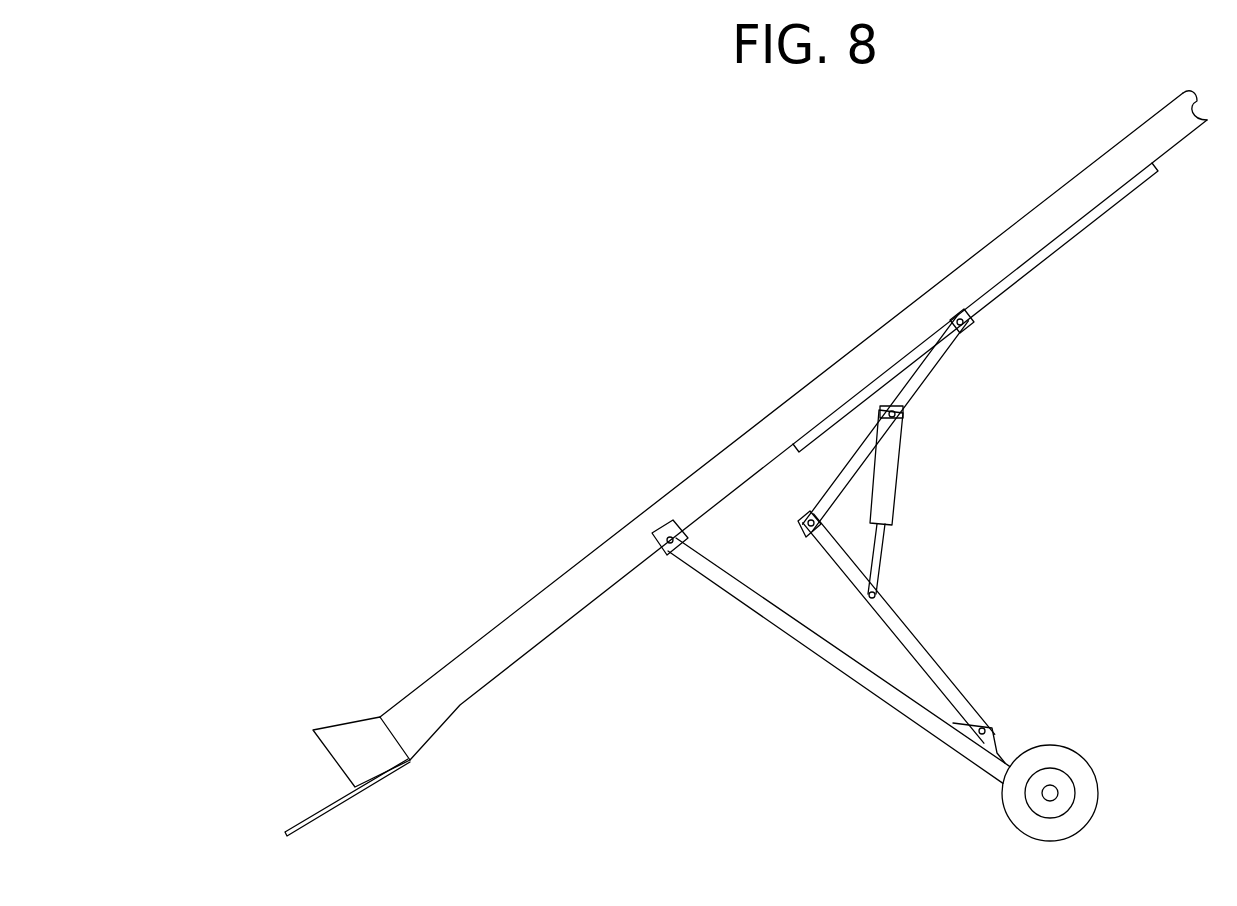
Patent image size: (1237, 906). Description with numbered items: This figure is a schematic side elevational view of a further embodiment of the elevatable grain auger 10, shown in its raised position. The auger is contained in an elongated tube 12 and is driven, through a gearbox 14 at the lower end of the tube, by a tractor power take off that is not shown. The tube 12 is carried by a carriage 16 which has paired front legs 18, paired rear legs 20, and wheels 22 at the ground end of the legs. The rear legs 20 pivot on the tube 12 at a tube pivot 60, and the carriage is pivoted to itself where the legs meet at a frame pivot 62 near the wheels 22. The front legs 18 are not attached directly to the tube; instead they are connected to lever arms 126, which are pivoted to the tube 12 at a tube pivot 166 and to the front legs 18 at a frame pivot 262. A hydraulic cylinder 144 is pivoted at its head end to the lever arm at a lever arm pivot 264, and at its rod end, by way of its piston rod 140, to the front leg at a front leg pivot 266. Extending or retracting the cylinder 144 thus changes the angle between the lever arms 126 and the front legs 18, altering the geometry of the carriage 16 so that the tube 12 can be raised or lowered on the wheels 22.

The elevatable grain auger 10 is at (530, 563).
The elongated tube 12 is at (797, 402).
The gearbox 14 is at (352, 753).
The carriage 16 is at (792, 668).
The front legs 18 is at (924, 658).
The rear legs 20 is at (872, 678).
The wheels 22 is at (1080, 765).
The tube pivot 60 is at (668, 550).
The frame pivot 62 is at (988, 728).
The lever arms 126 is at (936, 358).
The piston rod 140 is at (880, 540).
The cylinder 144 is at (888, 490).
The tube pivot 166 is at (972, 328).
The frame pivot 262 is at (802, 535).
The lever arm pivot 264 is at (906, 414).
The front leg pivot 266 is at (878, 594).